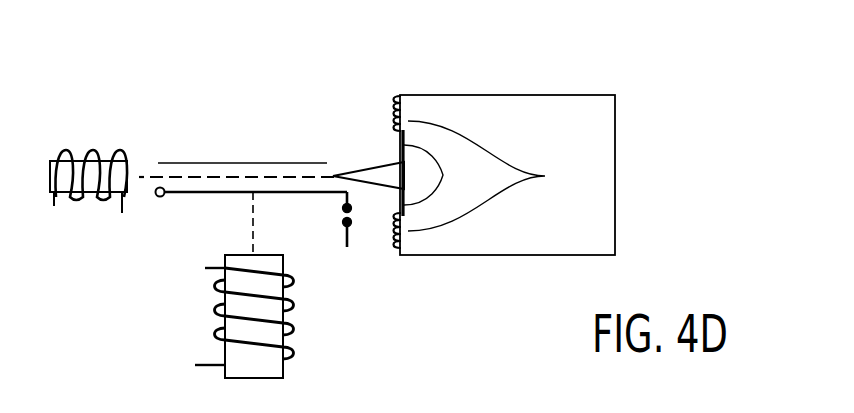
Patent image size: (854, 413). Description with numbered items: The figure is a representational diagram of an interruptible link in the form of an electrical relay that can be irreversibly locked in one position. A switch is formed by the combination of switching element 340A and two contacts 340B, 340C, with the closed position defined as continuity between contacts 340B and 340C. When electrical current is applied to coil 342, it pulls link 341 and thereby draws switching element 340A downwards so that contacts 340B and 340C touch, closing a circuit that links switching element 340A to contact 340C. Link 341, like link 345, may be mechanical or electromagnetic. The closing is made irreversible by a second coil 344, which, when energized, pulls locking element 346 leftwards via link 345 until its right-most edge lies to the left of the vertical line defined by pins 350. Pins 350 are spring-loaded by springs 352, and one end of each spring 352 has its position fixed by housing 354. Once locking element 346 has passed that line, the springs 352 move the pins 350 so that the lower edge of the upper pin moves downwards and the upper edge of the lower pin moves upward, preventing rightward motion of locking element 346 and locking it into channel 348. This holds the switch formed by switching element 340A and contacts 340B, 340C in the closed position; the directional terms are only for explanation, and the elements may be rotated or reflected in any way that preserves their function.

The switching element 340A is at (187, 195).
The contact 340B is at (344, 208).
The contact 340C is at (350, 236).
The link 341 is at (253, 233).
The coil 342 is at (204, 278).
The coil 344 is at (54, 206).
The link 345 is at (158, 165).
The locking element 346 is at (372, 167).
The channel 348 is at (233, 176).
The pins 350 is at (443, 175).
The springs 352 is at (545, 176).
The housing 354 is at (520, 95).